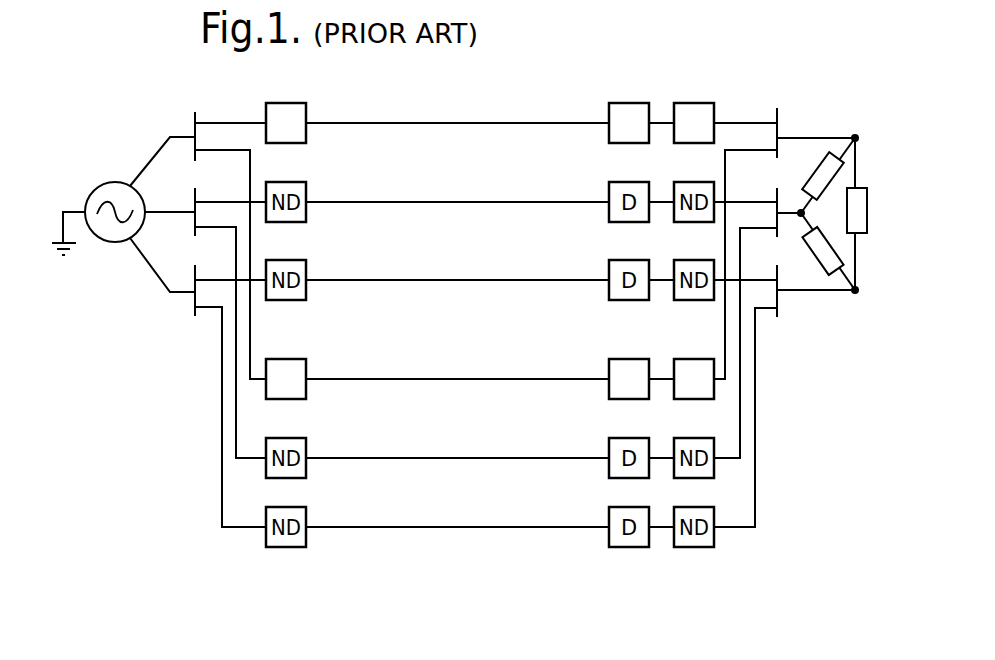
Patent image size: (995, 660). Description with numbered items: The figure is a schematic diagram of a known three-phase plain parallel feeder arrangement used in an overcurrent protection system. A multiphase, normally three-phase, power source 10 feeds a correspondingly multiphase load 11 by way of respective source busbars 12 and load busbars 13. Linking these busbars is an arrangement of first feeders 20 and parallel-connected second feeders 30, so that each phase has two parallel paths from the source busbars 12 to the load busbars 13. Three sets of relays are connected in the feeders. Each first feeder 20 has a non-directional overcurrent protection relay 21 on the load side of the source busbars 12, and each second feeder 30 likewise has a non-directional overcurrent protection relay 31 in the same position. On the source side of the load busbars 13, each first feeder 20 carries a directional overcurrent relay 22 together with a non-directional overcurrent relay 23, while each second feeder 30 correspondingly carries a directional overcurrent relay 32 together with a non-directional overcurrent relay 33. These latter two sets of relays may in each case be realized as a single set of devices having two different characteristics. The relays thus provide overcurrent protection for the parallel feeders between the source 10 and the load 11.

The power source 10 is at (95, 185).
The load 11 is at (853, 298).
The source busbars 12 is at (175, 305).
The load busbars 13 is at (778, 327).
The first feeders 20 is at (468, 115).
The non-directional overcurrent protection relay 21 is at (318, 110).
The directional overcurrent relay 22 is at (629, 100).
The non-directional overcurrent relay 23 is at (693, 100).
The second feeders 30 is at (465, 372).
The non-directional overcurrent protection relay 31 is at (313, 368).
The directional overcurrent relay 32 is at (610, 355).
The non-directional overcurrent relay 33 is at (690, 358).